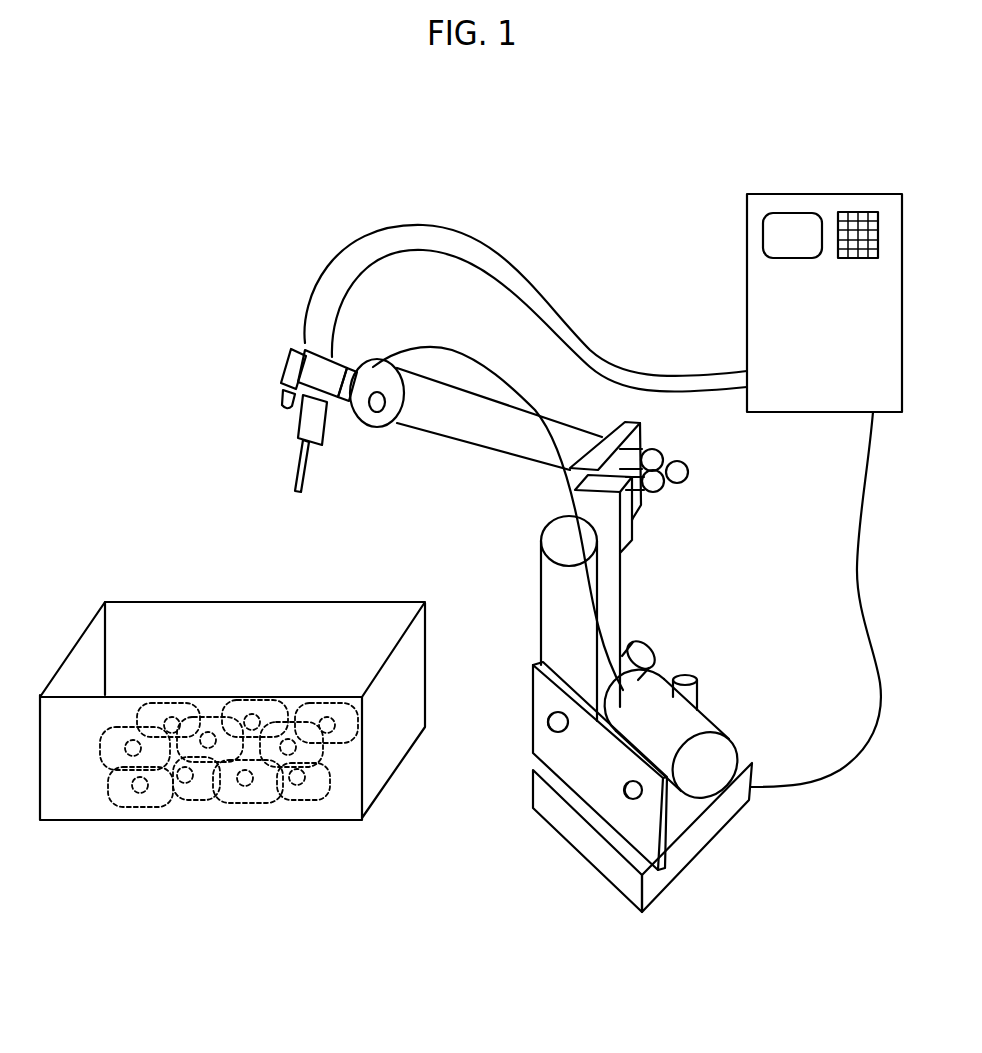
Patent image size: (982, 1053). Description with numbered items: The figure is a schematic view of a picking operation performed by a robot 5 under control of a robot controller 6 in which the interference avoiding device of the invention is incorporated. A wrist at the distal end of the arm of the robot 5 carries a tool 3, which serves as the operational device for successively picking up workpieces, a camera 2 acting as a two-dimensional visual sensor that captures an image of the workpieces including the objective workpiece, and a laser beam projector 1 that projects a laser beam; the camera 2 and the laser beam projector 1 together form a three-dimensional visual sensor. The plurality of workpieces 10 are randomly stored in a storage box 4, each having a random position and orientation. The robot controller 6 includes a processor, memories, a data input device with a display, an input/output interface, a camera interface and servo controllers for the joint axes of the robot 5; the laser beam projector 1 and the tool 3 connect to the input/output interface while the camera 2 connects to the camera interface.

The laser beam projector 1 is at (333, 357).
The camera 2 is at (287, 373).
The tool 3 is at (323, 427).
The storage box 4 is at (228, 603).
The robot 5 is at (705, 645).
The robot controller 6 is at (747, 292).
The workpieces 10 is at (223, 803).